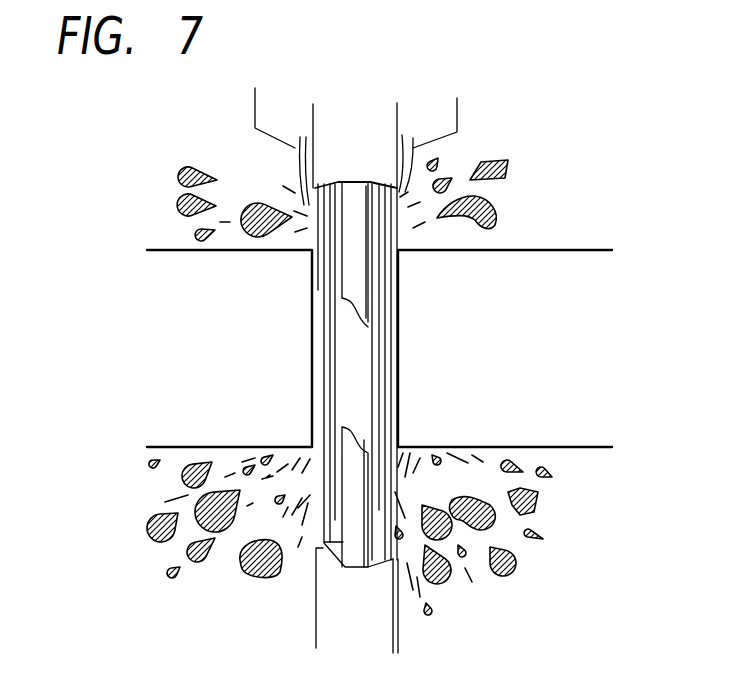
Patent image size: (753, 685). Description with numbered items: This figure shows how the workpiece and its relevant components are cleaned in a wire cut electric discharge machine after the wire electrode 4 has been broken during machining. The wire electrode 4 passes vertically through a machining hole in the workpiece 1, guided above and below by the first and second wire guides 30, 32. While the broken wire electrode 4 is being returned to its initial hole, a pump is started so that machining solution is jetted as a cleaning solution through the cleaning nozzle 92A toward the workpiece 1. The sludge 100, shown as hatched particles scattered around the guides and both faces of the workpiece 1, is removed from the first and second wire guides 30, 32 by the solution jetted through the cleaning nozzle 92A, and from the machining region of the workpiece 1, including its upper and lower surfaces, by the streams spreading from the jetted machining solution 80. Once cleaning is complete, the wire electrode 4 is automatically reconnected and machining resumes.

The workpiece 1 is at (590, 250).
The wire electrode 4 is at (314, 555).
The first wire guide 30 is at (397, 113).
The second wire guide 32 is at (392, 635).
The machining solution 80 is at (297, 160).
The cleaning nozzle 92A is at (457, 102).
The sludge 100 is at (497, 203).